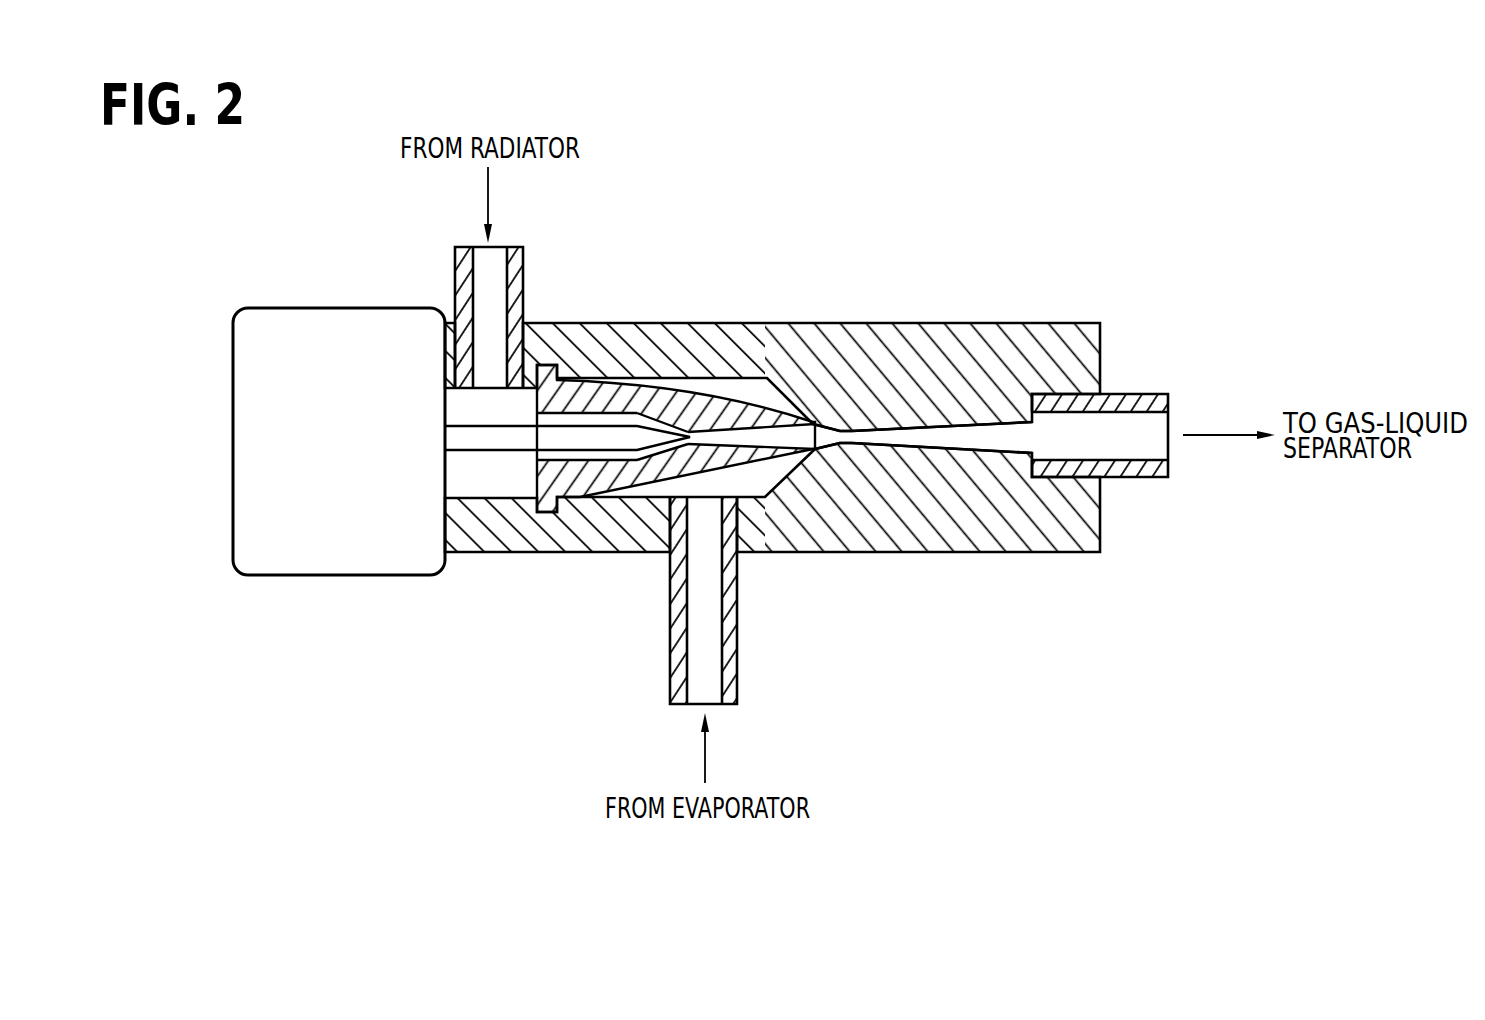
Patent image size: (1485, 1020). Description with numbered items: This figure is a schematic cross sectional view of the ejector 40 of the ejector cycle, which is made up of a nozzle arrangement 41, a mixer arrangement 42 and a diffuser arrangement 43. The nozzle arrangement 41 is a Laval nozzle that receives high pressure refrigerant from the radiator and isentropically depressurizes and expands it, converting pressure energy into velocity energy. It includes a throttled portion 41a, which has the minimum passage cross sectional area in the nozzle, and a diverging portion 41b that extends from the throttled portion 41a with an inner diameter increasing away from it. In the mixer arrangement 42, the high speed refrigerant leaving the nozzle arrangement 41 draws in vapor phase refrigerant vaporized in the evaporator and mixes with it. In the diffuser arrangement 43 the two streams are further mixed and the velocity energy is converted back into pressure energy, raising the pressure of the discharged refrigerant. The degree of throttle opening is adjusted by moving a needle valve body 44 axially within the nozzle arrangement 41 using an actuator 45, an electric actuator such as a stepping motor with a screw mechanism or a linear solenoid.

The ejector 40 is at (795, 306).
The nozzle arrangement 41 is at (711, 371).
The throttled portion 41a is at (700, 437).
The diverging portion 41b is at (793, 435).
The mixer arrangement 42 is at (862, 436).
The diffuser arrangement 43 is at (997, 438).
The needle valve body 44 is at (593, 452).
The actuator 45 is at (336, 292).